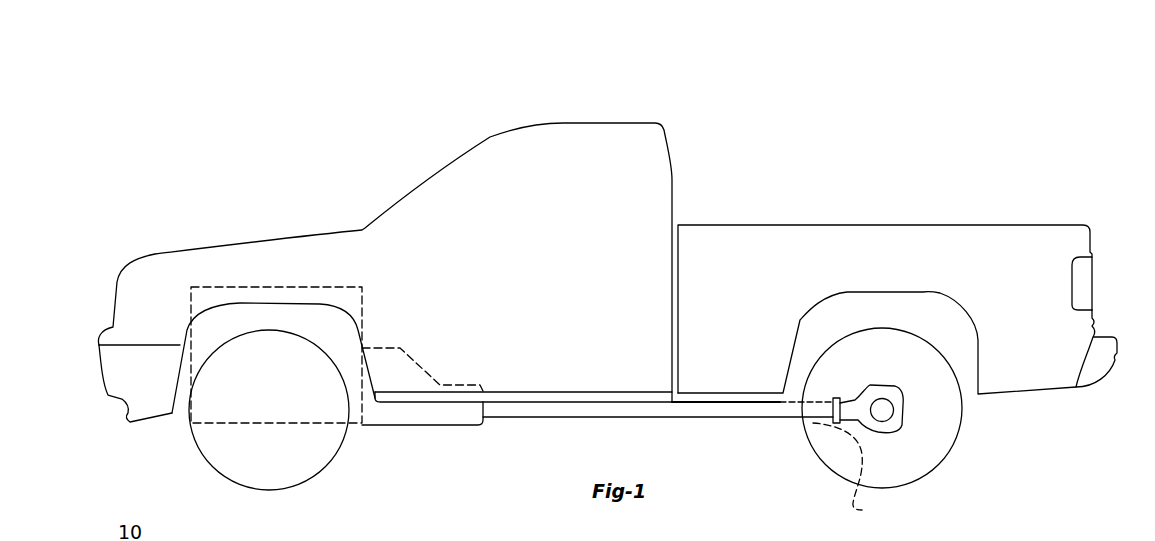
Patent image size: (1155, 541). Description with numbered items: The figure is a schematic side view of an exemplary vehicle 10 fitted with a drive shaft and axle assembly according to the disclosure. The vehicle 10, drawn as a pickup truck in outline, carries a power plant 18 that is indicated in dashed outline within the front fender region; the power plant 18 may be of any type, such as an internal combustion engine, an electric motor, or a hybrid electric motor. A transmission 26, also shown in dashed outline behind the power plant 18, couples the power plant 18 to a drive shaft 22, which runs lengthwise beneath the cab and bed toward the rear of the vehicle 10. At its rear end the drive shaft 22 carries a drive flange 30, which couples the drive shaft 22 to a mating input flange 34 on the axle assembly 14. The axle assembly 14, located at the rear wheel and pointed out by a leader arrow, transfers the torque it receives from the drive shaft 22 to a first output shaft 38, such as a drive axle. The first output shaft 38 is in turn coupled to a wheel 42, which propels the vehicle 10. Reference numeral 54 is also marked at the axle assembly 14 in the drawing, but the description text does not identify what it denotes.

The vehicle 10 is at (410, 178).
The drive unit 14 is at (931, 355).
The wheel well 18 is at (240, 297).
The frame rail 22 is at (540, 412).
The step 26 is at (410, 370).
The bracket 30 is at (833, 423).
The cable 34 is at (851, 473).
The axle 38 is at (889, 385).
The wheel 42 is at (915, 471).
The housing 54 is at (905, 400).